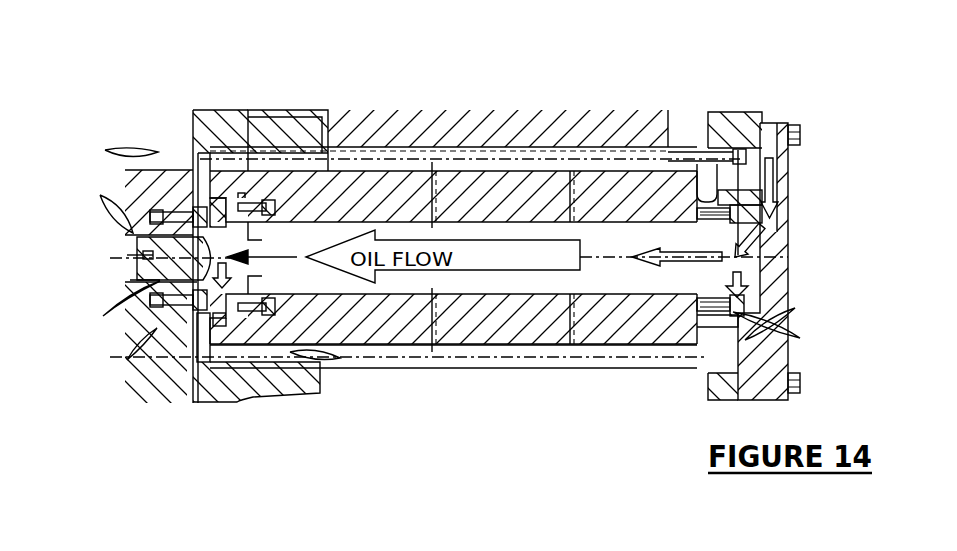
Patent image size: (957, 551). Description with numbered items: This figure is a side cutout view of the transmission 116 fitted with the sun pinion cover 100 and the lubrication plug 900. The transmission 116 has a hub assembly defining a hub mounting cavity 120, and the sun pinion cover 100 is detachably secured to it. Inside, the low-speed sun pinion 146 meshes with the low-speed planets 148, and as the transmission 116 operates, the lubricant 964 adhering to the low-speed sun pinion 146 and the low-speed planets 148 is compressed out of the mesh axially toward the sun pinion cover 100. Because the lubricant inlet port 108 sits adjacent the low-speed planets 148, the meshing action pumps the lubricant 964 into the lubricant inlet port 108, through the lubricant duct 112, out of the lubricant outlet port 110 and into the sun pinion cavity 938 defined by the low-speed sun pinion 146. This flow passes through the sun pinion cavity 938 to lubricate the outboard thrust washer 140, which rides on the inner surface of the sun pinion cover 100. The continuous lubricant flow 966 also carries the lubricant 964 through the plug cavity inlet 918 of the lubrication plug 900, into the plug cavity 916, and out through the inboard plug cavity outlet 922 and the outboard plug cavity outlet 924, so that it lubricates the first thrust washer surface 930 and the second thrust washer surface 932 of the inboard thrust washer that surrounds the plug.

The sun pinion cover 100 is at (822, 261).
The lubricant inlet port 108 is at (782, 169).
The lubricant outlet port 110 is at (783, 223).
The lubricant duct 112 is at (813, 188).
The transmission 116 is at (861, 109).
The hub mounting cavity 120 is at (755, 231).
The outboard thrust washer 140 is at (792, 332).
The low-speed sun pinion 146 is at (453, 143).
The low-speed planets 148 is at (453, 93).
The lubrication plug 900 is at (407, 381).
The plug cavity 916 is at (227, 180).
The plug cavity inlet 918 is at (281, 102).
The inboard plug cavity outlet 922 is at (130, 232).
The outboard plug cavity outlet 924 is at (144, 300).
The first thrust washer surface 930 is at (158, 150).
The second thrust washer surface 932 is at (91, 360).
The sun pinion cavity 938 is at (626, 281).
The lubricant 964 is at (473, 90).
The continuous lubricant flow 966 is at (474, 354).